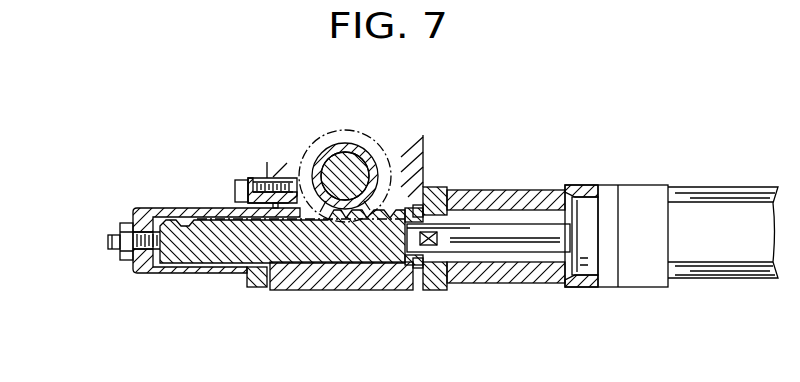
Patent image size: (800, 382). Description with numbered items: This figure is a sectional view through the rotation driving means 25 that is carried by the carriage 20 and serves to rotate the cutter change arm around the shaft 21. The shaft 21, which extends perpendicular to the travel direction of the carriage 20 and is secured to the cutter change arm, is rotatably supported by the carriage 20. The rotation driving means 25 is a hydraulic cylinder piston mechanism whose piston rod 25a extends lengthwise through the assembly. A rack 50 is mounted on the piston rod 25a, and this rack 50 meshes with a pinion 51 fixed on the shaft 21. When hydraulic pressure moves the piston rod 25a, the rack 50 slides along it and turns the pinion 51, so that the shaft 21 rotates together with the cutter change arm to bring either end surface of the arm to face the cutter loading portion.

The carriage 20 is at (427, 151).
The shaft 21 is at (326, 150).
The rotation driving means 25 is at (700, 230).
The piston rod 25a is at (483, 240).
The rack 50 is at (230, 247).
The pinion 51 is at (334, 212).